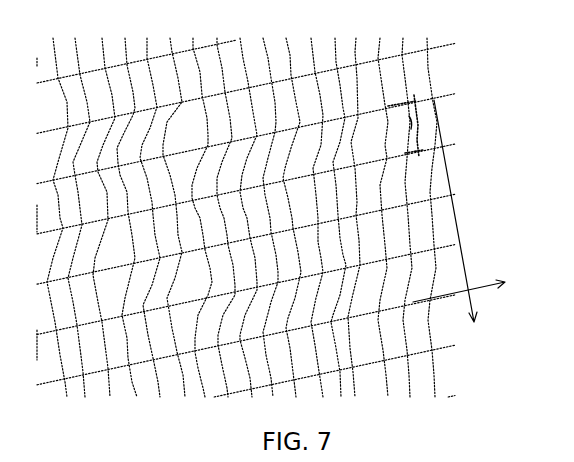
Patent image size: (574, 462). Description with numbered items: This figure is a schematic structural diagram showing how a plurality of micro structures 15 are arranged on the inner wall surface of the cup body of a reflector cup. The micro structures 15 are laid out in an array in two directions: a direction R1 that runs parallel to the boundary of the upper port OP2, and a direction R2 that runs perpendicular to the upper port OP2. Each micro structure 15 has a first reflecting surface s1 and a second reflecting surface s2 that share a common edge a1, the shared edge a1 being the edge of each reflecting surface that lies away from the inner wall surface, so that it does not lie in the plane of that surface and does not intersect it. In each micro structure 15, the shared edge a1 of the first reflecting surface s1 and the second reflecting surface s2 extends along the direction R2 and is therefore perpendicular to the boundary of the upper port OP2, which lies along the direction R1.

The upper port OP2 is at (423, 53).
The micro structure 15 is at (418, 100).
The first reflecting surface s1 is at (405, 113).
The shared edge a1 is at (410, 122).
The second reflecting surface s2 is at (412, 138).
The direction R1 is at (464, 229).
The direction R2 is at (479, 287).